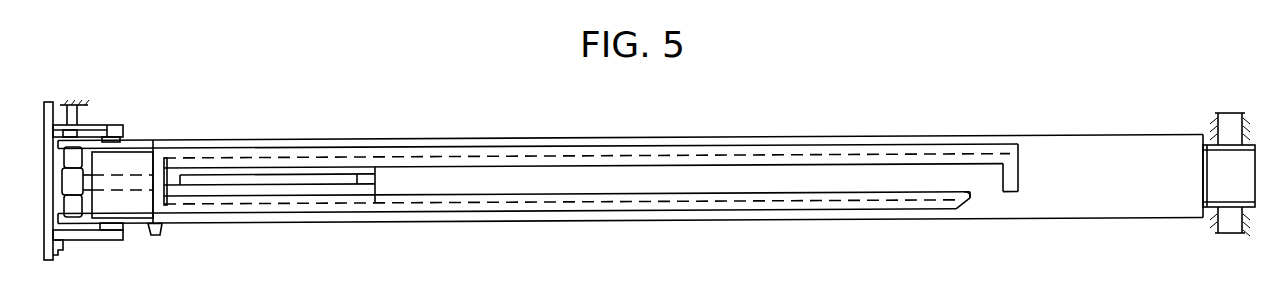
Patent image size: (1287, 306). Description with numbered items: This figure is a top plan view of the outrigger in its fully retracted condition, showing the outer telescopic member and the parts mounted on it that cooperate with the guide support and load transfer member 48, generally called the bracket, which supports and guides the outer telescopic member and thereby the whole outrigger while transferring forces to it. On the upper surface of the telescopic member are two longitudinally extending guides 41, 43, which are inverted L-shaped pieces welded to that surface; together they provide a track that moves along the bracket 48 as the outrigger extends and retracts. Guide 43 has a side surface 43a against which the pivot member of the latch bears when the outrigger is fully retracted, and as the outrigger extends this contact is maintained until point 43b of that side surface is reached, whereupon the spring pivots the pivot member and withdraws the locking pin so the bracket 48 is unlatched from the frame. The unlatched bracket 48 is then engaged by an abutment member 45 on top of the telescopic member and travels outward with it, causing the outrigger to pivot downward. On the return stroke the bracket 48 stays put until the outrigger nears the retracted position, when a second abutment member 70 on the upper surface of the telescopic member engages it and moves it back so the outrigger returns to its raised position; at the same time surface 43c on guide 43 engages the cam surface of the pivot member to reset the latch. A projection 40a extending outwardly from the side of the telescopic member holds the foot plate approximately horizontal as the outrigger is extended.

The guide 41 is at (548, 155).
The guide 43 is at (573, 205).
The side surface of guide 43 43a is at (397, 213).
The point of the side surface of guide 43 43b is at (957, 210).
The surface on guide 43 43c is at (969, 196).
The abutment member 45 is at (1012, 178).
The guide support and load transfer member (bracket) 48 is at (253, 178).
The abutment member 70 is at (158, 173).
The projection 40a is at (156, 236).